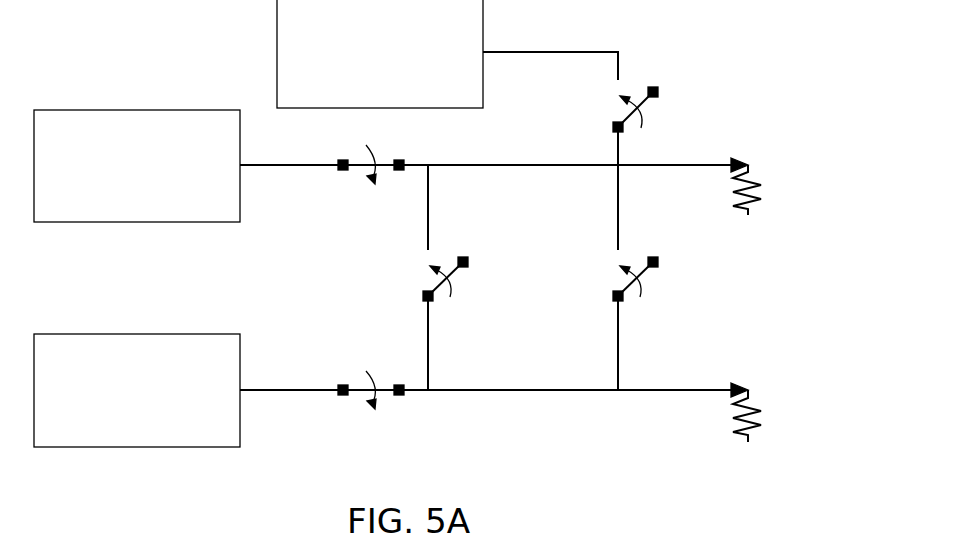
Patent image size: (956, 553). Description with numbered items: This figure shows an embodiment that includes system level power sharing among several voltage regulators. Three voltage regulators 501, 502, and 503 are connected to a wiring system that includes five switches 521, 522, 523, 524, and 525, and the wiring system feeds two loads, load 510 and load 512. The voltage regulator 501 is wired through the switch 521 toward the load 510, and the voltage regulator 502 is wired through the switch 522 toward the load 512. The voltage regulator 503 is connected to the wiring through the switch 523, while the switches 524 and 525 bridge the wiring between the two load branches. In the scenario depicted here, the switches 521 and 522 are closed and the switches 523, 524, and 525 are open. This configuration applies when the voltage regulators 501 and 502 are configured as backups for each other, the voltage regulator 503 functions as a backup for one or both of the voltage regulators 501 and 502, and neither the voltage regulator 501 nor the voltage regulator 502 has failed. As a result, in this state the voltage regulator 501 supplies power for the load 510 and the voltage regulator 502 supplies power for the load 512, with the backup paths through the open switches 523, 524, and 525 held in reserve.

The voltage regulator 501 is at (116, 206).
The voltage regulator 502 is at (116, 433).
The voltage regulator 503 is at (359, 94).
The load 510 is at (763, 183).
The load 512 is at (763, 407).
The switch 521 is at (362, 168).
The switch 522 is at (363, 393).
The switch 523 is at (636, 107).
The switch 524 is at (627, 288).
The switch 525 is at (437, 288).